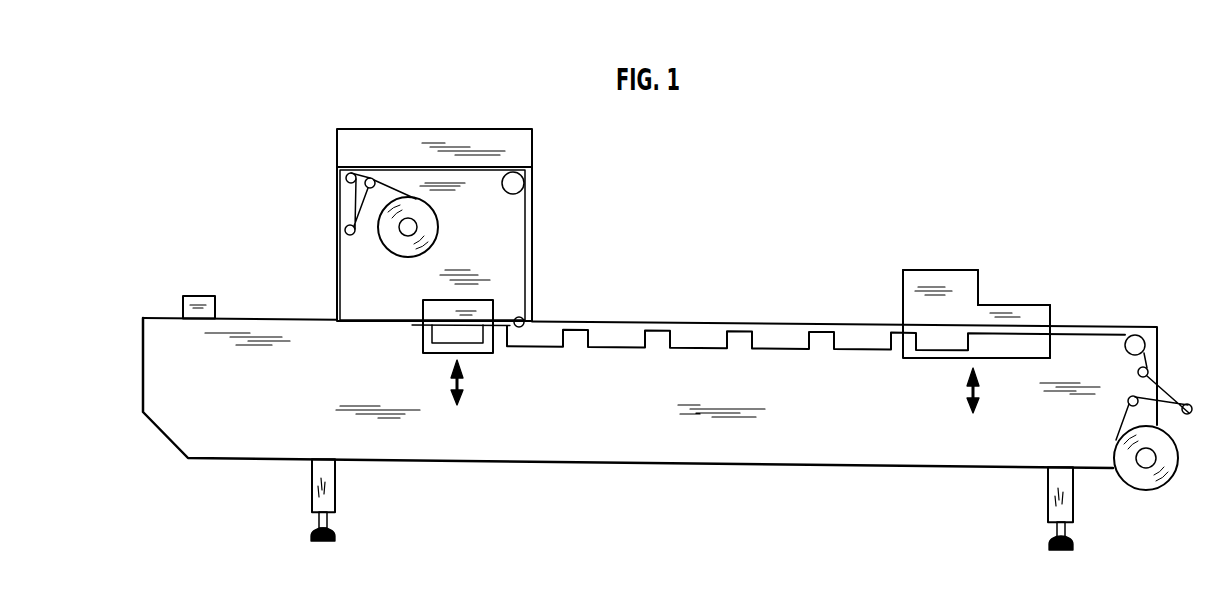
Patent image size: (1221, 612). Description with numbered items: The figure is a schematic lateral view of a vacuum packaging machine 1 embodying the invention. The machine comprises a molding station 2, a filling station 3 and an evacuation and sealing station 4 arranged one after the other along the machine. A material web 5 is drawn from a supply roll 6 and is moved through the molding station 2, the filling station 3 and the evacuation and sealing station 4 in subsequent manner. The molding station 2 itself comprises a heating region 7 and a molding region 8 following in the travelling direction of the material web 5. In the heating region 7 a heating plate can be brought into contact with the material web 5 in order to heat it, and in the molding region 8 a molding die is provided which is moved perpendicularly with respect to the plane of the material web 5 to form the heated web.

The packaging machine 1 is at (687, 245).
The molding station 2 is at (983, 292).
The filling station 3 is at (710, 317).
The evacuation and sealing station 4 is at (533, 273).
The material web 5 is at (1117, 333).
The supply roll 6 is at (1150, 488).
The heating region 7 is at (1026, 318).
The molding region 8 is at (940, 285).